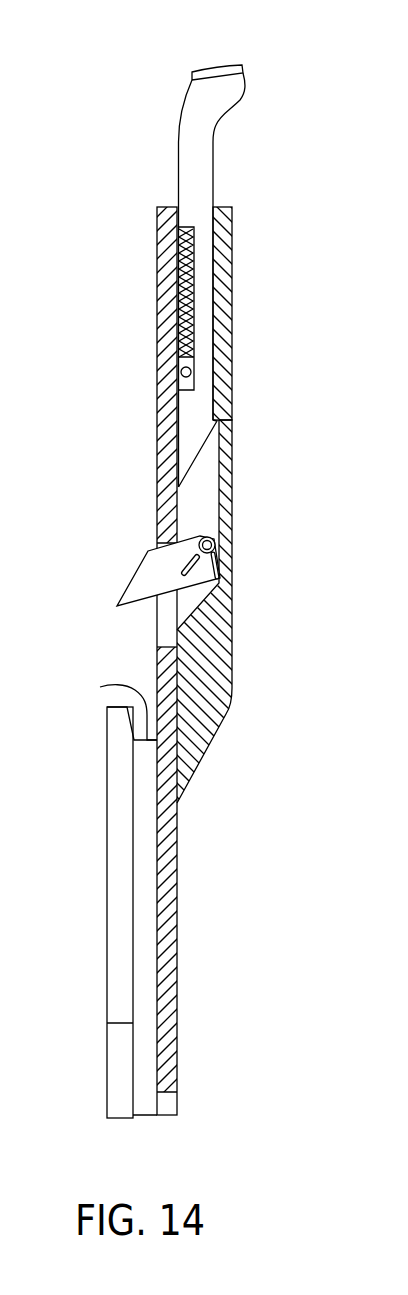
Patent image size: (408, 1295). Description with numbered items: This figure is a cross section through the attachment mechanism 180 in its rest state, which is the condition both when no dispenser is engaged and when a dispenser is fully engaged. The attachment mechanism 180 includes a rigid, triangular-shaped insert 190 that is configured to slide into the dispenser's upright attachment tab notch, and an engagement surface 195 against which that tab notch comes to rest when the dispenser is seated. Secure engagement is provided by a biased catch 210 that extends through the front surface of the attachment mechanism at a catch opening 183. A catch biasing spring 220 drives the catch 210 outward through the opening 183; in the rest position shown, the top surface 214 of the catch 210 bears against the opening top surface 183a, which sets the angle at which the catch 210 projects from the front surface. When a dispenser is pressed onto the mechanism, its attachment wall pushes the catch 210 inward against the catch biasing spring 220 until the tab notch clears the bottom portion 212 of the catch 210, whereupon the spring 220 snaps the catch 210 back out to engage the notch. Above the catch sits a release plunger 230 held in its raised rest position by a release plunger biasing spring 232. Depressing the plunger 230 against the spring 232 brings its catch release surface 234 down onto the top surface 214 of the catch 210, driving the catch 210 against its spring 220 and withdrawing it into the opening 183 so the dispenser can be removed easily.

The attachment mechanism 180 is at (84, 173).
The release plunger 230 is at (243, 92).
The release plunger biasing spring 232 is at (178, 288).
The catch release surface 234 is at (198, 460).
The top surface of the catch 214 is at (187, 533).
The opening top surface 183a is at (140, 568).
The catch biasing spring 220 is at (223, 568).
The bottom portion of the catch 212 is at (117, 605).
The biased catch 210 is at (130, 605).
The catch opening 183 is at (180, 677).
The engagement surface 195 is at (105, 685).
The triangular-shaped insert 190 is at (108, 933).